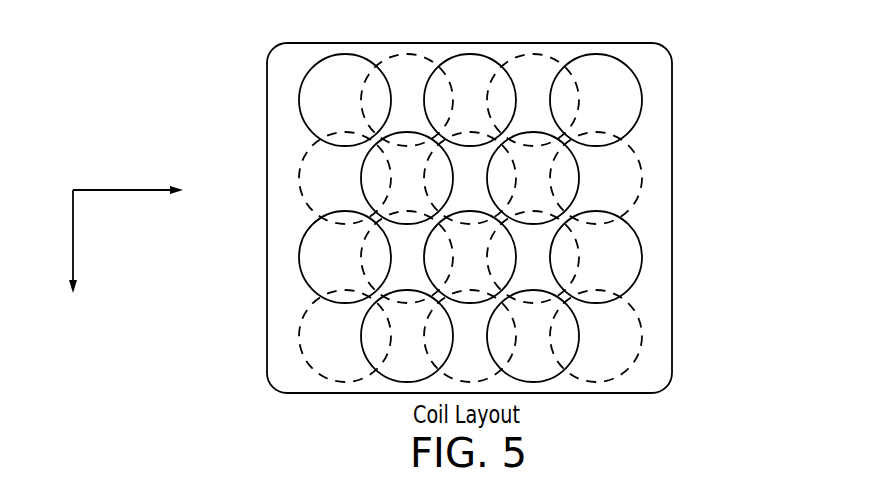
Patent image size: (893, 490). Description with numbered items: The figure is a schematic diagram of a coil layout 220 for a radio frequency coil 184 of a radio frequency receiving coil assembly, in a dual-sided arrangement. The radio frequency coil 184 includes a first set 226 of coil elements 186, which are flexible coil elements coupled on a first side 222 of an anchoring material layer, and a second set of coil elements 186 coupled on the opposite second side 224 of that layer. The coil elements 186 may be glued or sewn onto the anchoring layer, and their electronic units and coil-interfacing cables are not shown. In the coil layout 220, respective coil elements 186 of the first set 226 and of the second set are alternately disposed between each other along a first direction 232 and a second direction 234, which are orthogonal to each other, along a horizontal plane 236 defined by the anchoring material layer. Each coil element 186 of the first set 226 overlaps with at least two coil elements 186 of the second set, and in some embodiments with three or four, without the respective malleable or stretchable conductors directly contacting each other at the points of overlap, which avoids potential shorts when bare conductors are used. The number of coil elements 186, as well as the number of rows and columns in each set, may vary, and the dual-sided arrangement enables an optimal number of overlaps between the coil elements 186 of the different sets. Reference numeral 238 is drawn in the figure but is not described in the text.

The radio frequency coil 184 is at (676, 30).
The coil elements 186 is at (638, 325).
The coil layout 220 is at (533, 29).
The first side 222 is at (655, 135).
The second side 224 is at (676, 94).
The first set of coil elements 226 is at (673, 197).
The first direction 232 is at (125, 188).
The second direction 234 is at (73, 243).
The horizontal plane 236 is at (249, 278).
The second coil row 238 is at (249, 316).